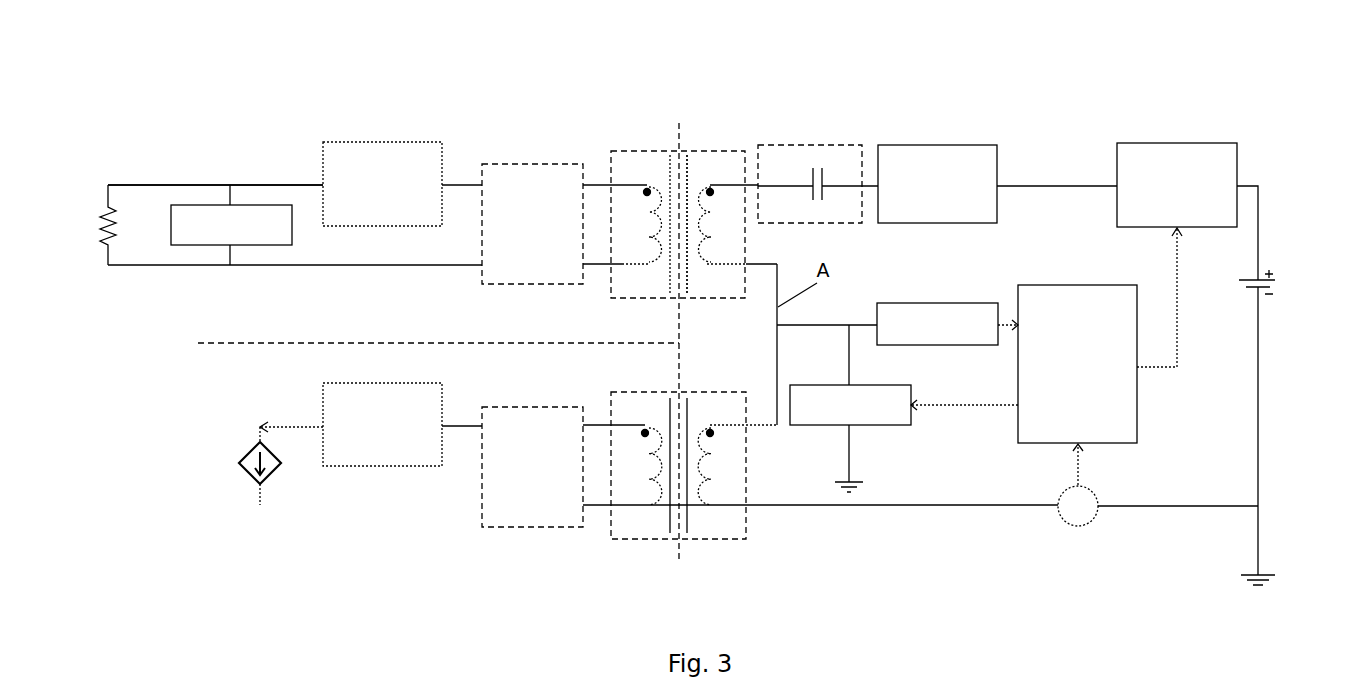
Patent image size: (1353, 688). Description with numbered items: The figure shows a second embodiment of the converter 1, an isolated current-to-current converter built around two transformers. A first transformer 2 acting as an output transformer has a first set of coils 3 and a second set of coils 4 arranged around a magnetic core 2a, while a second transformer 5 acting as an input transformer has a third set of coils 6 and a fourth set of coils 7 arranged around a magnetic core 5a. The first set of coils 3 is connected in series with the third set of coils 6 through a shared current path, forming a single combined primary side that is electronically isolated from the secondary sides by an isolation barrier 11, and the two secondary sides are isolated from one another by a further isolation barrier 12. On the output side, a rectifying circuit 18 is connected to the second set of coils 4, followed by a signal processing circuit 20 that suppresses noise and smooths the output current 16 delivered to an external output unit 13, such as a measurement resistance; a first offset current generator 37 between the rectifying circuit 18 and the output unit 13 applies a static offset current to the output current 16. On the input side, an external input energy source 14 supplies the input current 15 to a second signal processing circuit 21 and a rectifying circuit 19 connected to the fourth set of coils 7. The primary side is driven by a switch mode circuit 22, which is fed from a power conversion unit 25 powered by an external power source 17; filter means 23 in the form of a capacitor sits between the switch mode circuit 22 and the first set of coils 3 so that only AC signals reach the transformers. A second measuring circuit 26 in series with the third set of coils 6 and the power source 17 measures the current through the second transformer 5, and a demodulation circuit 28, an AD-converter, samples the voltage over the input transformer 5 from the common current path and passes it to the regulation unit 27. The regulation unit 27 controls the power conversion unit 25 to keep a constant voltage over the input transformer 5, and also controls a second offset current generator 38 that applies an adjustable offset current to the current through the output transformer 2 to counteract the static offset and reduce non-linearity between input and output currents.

The converter 1 is at (538, 91).
The first transformer 2 is at (689, 307).
The magnetic core 2a is at (688, 265).
The first set of coils 3 is at (712, 185).
The second set of coils 4 is at (646, 186).
The second transformer 5 is at (680, 506).
The magnetic core 5a is at (687, 527).
The third set of coils 6 is at (705, 503).
The fourth set of coils 7 is at (648, 503).
The isolation barrier 11 is at (680, 128).
The isolation barrier 12 is at (227, 342).
The external output unit 13 is at (102, 203).
The external input energy source 14 is at (245, 470).
The input current 15 is at (300, 422).
The output current 16 is at (168, 183).
The external power source 17 is at (1277, 283).
The rectifying circuit 18 is at (532, 224).
The rectifying circuit 19 is at (532, 467).
The signal processing circuit 20 is at (382, 184).
The second signal processing circuit 21 is at (382, 424).
The switch mode circuit 22 is at (937, 184).
The filter means 23 is at (815, 143).
The power conversion unit 25 is at (1177, 185).
The second measuring circuit 26 is at (1093, 517).
The regulation unit 27 is at (1046, 356).
The demodulation circuit 28 is at (937, 324).
The first offset current generator 37 is at (231, 225).
The second offset current generator 38 is at (850, 405).